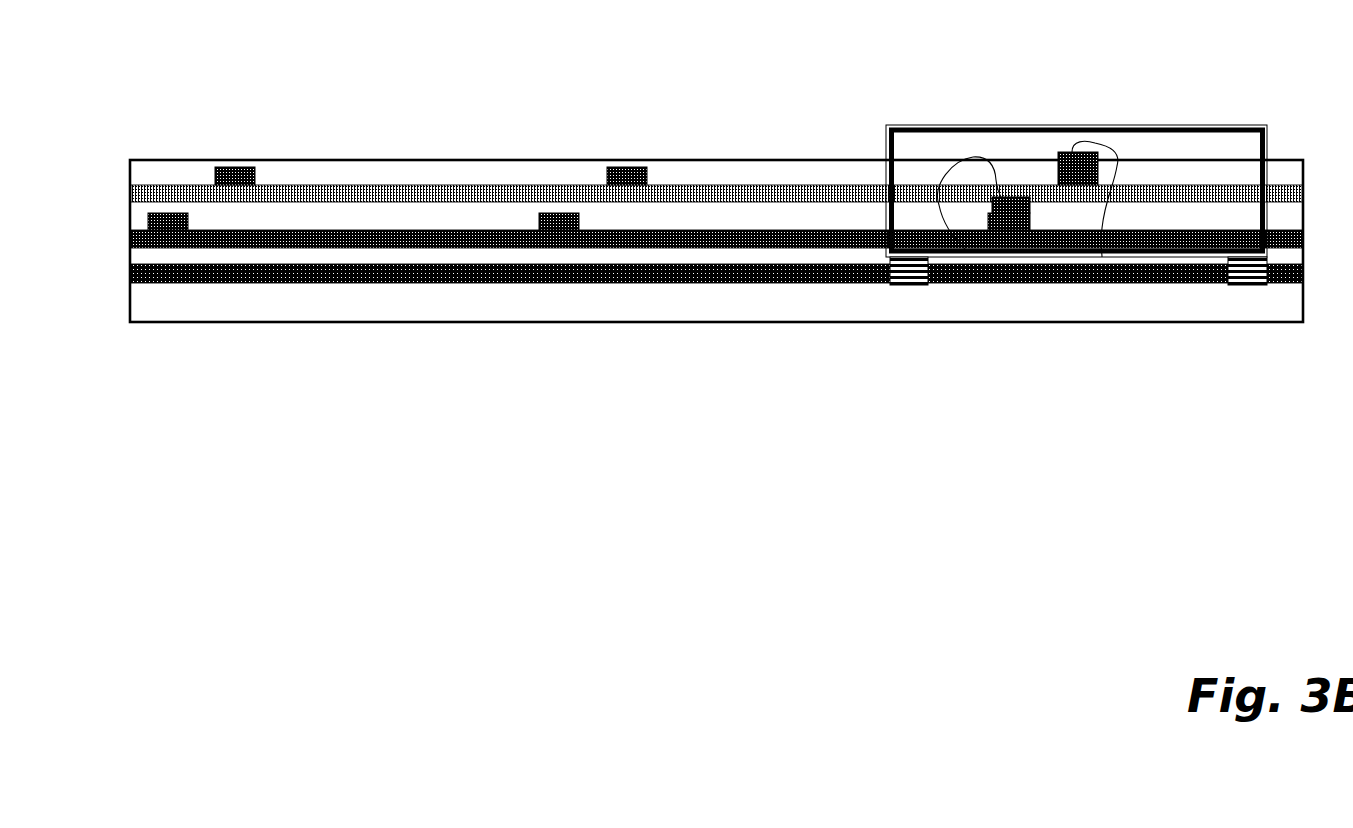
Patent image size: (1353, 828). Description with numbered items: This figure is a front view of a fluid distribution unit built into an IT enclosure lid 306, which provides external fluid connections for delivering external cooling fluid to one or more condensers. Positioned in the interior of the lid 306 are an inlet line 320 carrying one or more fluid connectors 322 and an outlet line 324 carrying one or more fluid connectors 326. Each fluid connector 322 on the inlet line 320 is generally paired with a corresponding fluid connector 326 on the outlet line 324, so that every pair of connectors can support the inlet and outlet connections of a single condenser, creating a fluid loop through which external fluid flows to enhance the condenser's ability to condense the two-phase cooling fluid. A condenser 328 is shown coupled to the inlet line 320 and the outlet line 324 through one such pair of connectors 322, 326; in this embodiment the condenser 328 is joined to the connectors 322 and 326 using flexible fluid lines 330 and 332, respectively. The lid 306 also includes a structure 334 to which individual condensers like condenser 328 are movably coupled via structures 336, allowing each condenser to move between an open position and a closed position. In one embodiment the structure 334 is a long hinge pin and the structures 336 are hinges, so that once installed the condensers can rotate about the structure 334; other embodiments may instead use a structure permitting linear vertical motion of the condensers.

The IT enclosure lid 306 is at (125, 162).
The inlet line 320 is at (798, 190).
The fluid connector 322 is at (240, 176).
The outlet line 324 is at (402, 238).
The fluid connector 326 is at (163, 222).
The condenser 328 is at (886, 133).
The flexible fluid line 330 is at (1105, 150).
The flexible fluid line 332 is at (950, 157).
The structure 334 is at (438, 281).
The structures 336 is at (914, 274).